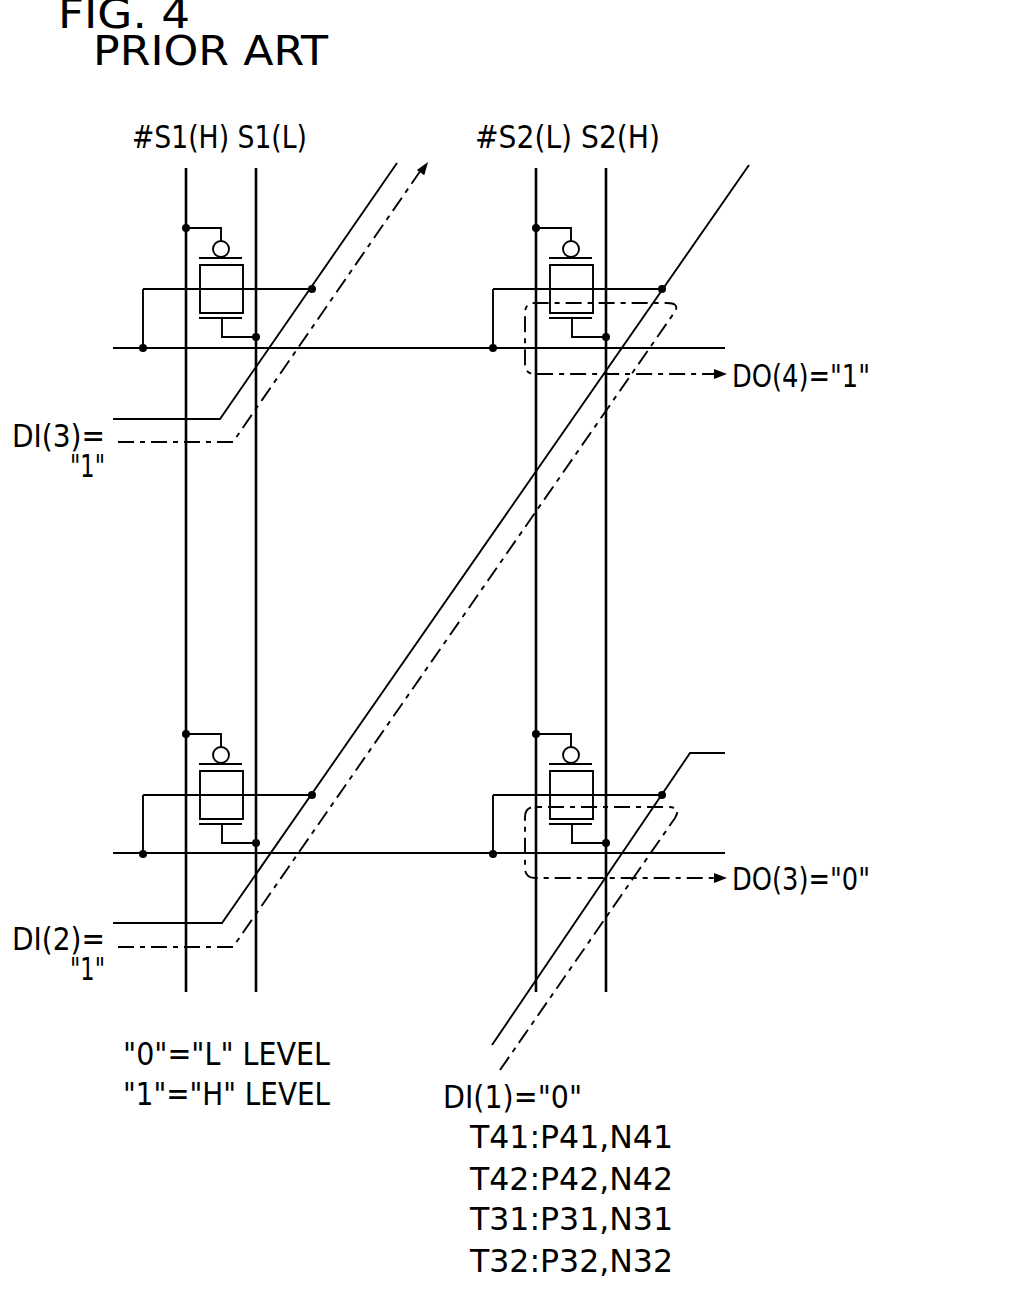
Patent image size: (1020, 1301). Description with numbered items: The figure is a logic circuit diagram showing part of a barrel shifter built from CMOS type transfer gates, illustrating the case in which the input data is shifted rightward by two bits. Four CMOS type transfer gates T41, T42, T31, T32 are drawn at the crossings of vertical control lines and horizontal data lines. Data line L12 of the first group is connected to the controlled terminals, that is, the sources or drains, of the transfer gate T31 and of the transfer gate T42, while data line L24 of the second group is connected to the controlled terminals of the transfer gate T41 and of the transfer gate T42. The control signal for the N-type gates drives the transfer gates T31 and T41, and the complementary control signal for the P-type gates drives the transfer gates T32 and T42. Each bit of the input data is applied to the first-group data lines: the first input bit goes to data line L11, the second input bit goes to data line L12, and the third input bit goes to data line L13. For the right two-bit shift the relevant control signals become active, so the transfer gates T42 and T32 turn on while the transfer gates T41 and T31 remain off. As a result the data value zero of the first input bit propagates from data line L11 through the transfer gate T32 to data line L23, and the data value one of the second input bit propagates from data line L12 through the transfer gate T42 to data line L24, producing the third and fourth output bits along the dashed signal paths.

The CMOS type transfer gate T41 is at (243, 270).
The CMOS type transfer gate T42 is at (589, 257).
The CMOS type transfer gate T31 is at (249, 763).
The CMOS type transfer gate T32 is at (589, 763).
The data line L11 is at (508, 1020).
The data line L12 is at (143, 923).
The data line L13 is at (143, 419).
The data line L23 is at (707, 853).
The data line L24 is at (707, 348).